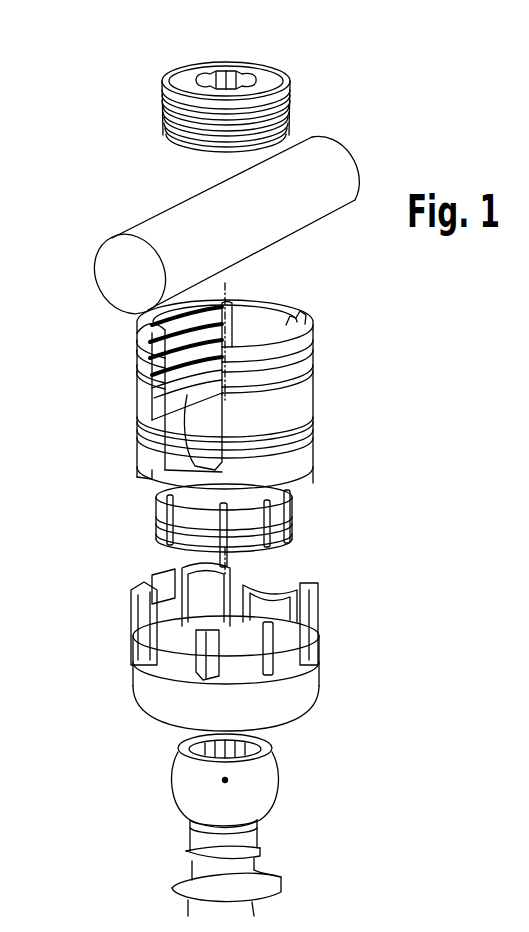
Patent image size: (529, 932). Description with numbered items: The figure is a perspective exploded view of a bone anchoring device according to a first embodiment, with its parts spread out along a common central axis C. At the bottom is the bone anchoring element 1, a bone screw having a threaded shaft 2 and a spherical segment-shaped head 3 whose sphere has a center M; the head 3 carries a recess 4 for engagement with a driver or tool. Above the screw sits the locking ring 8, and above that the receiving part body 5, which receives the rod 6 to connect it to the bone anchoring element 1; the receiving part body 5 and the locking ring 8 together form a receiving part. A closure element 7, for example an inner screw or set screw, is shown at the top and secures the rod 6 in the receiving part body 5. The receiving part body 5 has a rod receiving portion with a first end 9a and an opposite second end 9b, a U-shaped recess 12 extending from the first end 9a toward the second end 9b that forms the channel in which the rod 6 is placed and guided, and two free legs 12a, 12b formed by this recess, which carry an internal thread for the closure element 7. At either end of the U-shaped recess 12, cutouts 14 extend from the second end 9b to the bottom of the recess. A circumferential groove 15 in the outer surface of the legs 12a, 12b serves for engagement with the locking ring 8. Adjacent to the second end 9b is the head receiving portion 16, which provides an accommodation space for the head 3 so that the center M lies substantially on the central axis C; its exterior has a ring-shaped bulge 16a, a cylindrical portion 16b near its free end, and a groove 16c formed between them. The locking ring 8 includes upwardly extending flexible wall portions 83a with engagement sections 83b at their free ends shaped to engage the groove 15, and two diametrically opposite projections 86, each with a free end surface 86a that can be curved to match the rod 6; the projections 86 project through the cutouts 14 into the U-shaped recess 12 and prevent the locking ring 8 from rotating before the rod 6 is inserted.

The bone anchoring element 1 is at (241, 820).
The threaded shaft 2 is at (276, 866).
The head 3 is at (237, 776).
The recess 4 is at (262, 743).
The receiving part body 5 is at (281, 463).
The rod 6 is at (335, 172).
The closure element 7 is at (266, 80).
The locking ring 8 is at (232, 635).
The first end 9a is at (302, 322).
The second end 9b is at (145, 482).
The U-shaped recess 12 is at (148, 426).
The free leg 12a is at (137, 357).
The free leg 12b is at (315, 348).
The cutout 14 is at (152, 458).
The groove 15 is at (312, 435).
The head receiving portion 16 is at (232, 513).
The ring-shaped bulge 16a is at (293, 500).
The cylindrical portion 16b is at (290, 538).
The groove 16c is at (164, 530).
The upwardly extending flexible wall portion 83a is at (137, 598).
The engagement section 83b is at (160, 573).
The projection 86 is at (314, 615).
The free end surface 86a is at (158, 630).
The central axis C is at (228, 297).
The center M is at (223, 781).